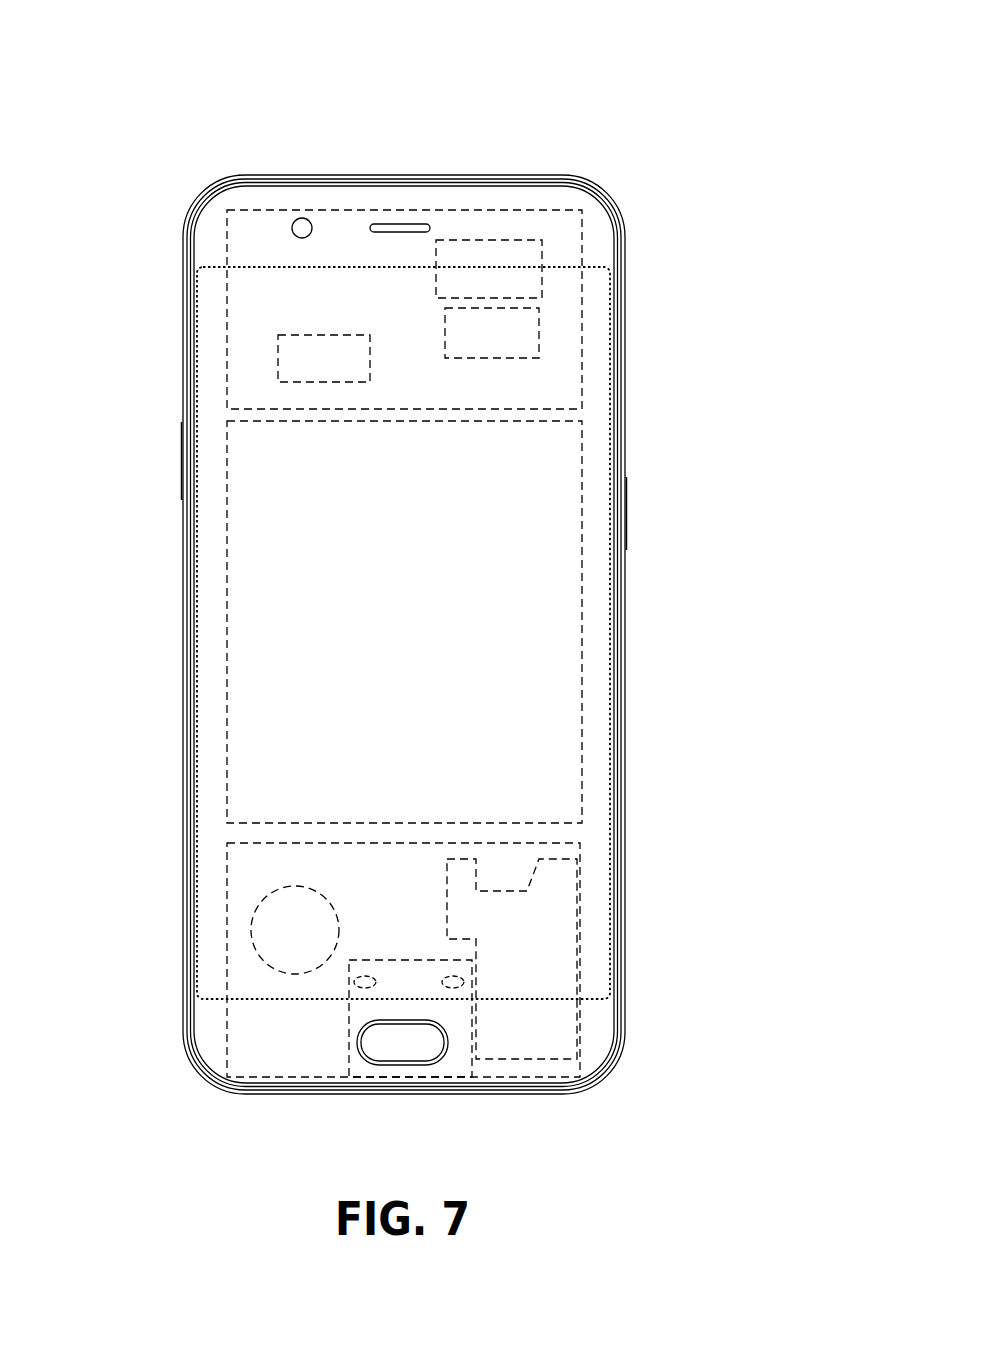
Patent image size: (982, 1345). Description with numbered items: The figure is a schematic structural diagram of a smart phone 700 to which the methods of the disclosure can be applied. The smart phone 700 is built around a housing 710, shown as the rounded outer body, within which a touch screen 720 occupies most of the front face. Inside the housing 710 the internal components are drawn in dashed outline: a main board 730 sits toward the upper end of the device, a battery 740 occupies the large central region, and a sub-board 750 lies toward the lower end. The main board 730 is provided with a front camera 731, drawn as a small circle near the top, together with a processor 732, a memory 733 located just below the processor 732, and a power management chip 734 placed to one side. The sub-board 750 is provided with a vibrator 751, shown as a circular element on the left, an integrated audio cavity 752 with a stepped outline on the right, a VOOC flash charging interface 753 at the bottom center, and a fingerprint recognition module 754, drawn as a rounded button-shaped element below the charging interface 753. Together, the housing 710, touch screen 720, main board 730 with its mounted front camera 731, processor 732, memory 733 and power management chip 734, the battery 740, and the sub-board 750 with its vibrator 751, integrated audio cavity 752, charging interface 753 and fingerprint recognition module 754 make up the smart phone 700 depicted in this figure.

The smart phone 700 is at (476, 88).
The housing 710 is at (610, 197).
The touch screen 720 is at (598, 578).
The main board 730 is at (582, 263).
The front camera 731 is at (304, 217).
The processor 732 is at (533, 240).
The memory 733 is at (540, 330).
The power management chip 734 is at (285, 350).
The battery 740 is at (505, 518).
The sub-board 750 is at (582, 845).
The vibrator 751 is at (250, 935).
The integrated audio cavity 752 is at (545, 912).
The VOOC flash charging interface 753 is at (453, 1077).
The fingerprint recognition module 754 is at (363, 1055).